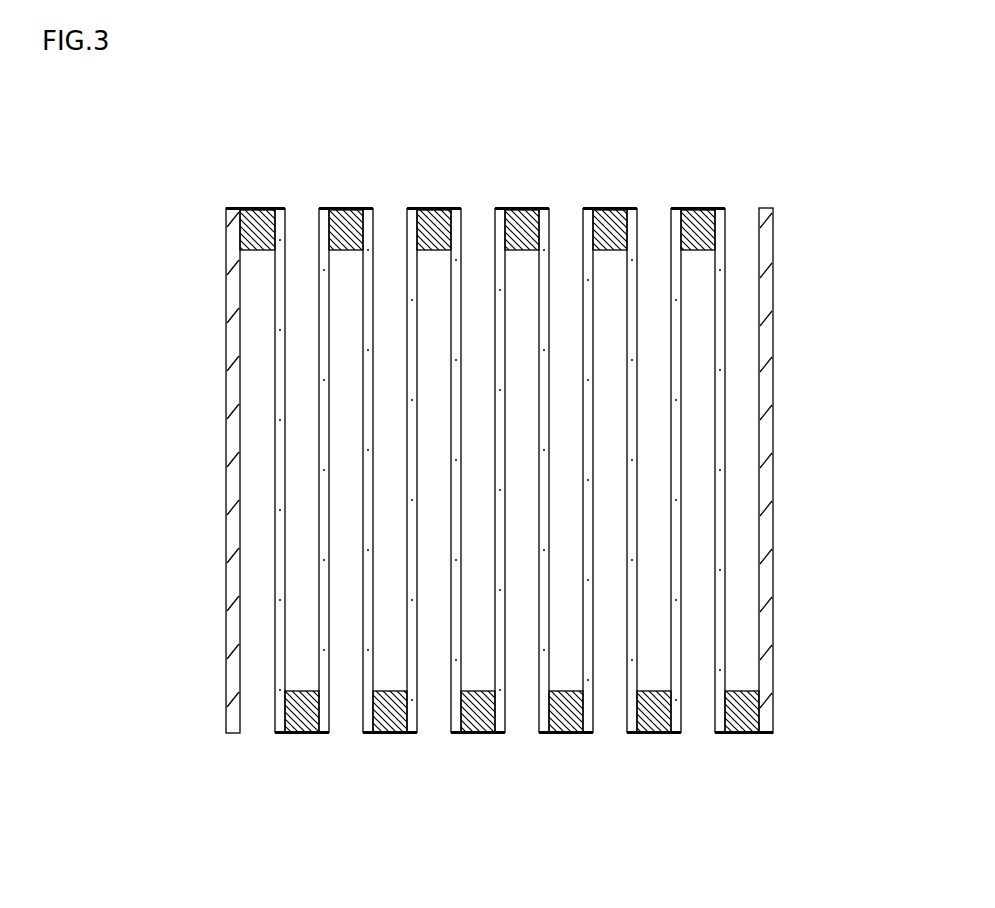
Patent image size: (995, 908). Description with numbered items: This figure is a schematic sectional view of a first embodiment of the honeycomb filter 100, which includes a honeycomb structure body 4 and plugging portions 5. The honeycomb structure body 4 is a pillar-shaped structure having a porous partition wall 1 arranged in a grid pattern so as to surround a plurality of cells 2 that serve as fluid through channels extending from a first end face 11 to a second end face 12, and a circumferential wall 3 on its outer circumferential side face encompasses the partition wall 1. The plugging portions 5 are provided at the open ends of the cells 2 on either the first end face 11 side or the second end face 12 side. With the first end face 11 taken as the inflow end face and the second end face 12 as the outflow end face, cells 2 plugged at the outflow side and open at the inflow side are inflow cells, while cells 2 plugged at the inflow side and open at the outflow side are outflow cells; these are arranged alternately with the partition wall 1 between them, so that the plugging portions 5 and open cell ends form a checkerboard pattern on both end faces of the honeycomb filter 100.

The honeycomb filter 100 is at (857, 84).
The partition wall 1 is at (630, 228).
The cells 2 is at (558, 272).
The circumferential wall 3 is at (237, 361).
The honeycomb structure body 4 is at (786, 208).
The plugging portions 5 is at (265, 228).
The first end face 11 is at (244, 182).
The second end face 12 is at (265, 758).